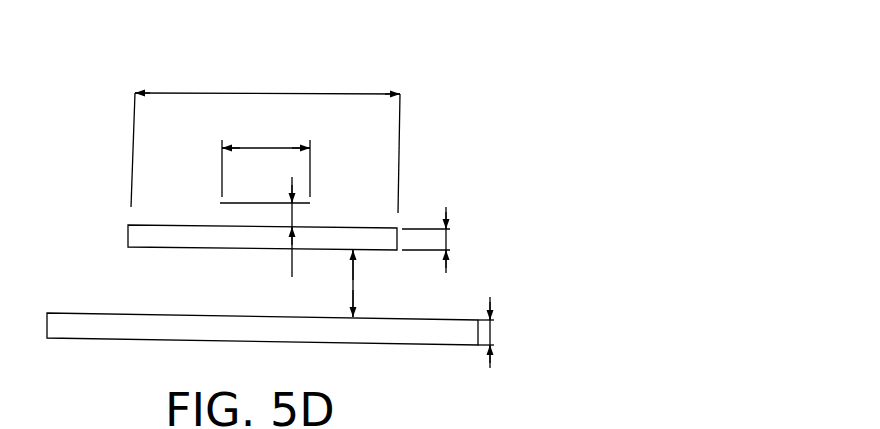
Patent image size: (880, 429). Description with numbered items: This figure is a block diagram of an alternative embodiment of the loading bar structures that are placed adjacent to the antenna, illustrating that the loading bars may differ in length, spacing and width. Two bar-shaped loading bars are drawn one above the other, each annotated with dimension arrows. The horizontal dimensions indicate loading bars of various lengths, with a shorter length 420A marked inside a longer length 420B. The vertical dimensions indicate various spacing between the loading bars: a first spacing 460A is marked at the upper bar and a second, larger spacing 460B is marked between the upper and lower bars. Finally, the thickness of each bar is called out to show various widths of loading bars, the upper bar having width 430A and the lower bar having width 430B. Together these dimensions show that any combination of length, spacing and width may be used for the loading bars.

The loading bar length 420B is at (223, 93).
The loading bar length 420A is at (260, 145).
The spacing between loading bars 460A is at (292, 215).
The spacing between loading bars 460B is at (354, 283).
The loading bar width 430A is at (448, 240).
The loading bar width 430B is at (492, 333).